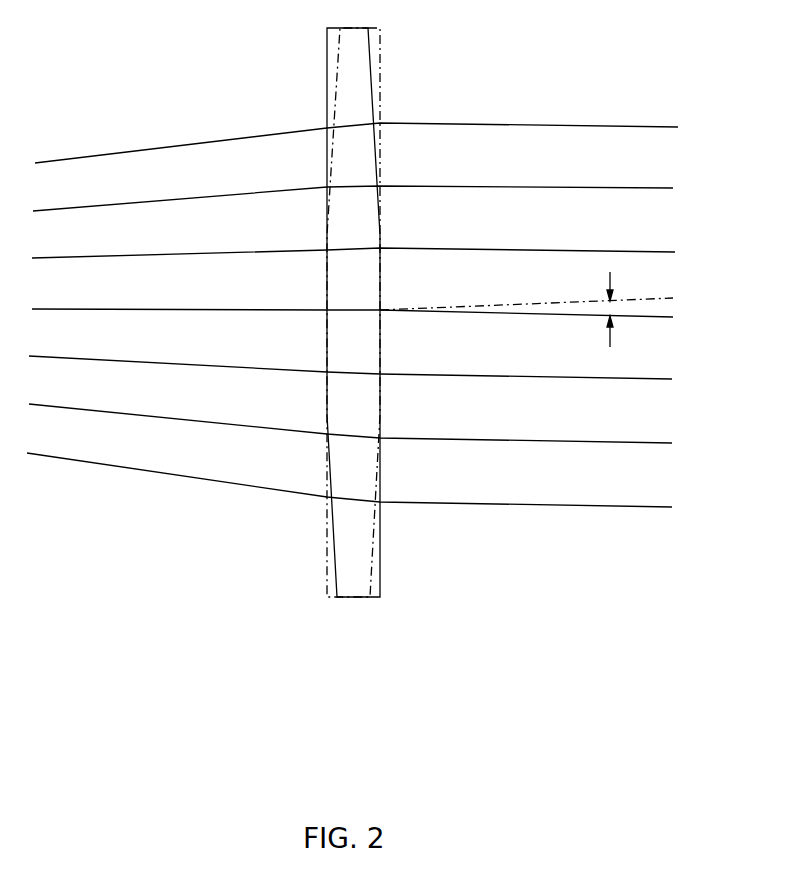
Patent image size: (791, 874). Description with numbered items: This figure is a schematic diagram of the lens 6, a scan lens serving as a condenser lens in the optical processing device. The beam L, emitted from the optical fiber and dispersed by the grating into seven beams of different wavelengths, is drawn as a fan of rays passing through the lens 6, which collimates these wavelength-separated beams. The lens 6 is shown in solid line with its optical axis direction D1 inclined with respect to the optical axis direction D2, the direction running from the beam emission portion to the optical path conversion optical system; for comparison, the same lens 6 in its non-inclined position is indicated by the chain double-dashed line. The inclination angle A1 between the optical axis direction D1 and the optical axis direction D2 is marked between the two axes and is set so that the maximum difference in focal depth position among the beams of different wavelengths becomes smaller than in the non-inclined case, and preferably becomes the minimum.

The lens 6 is at (380, 572).
The beam L is at (182, 200).
The optical axis direction of the lens D1 is at (650, 297).
The optical axis direction from the beam emission portion to the optical path conver D2 is at (394, 342).
The inclination angle A1 is at (618, 312).